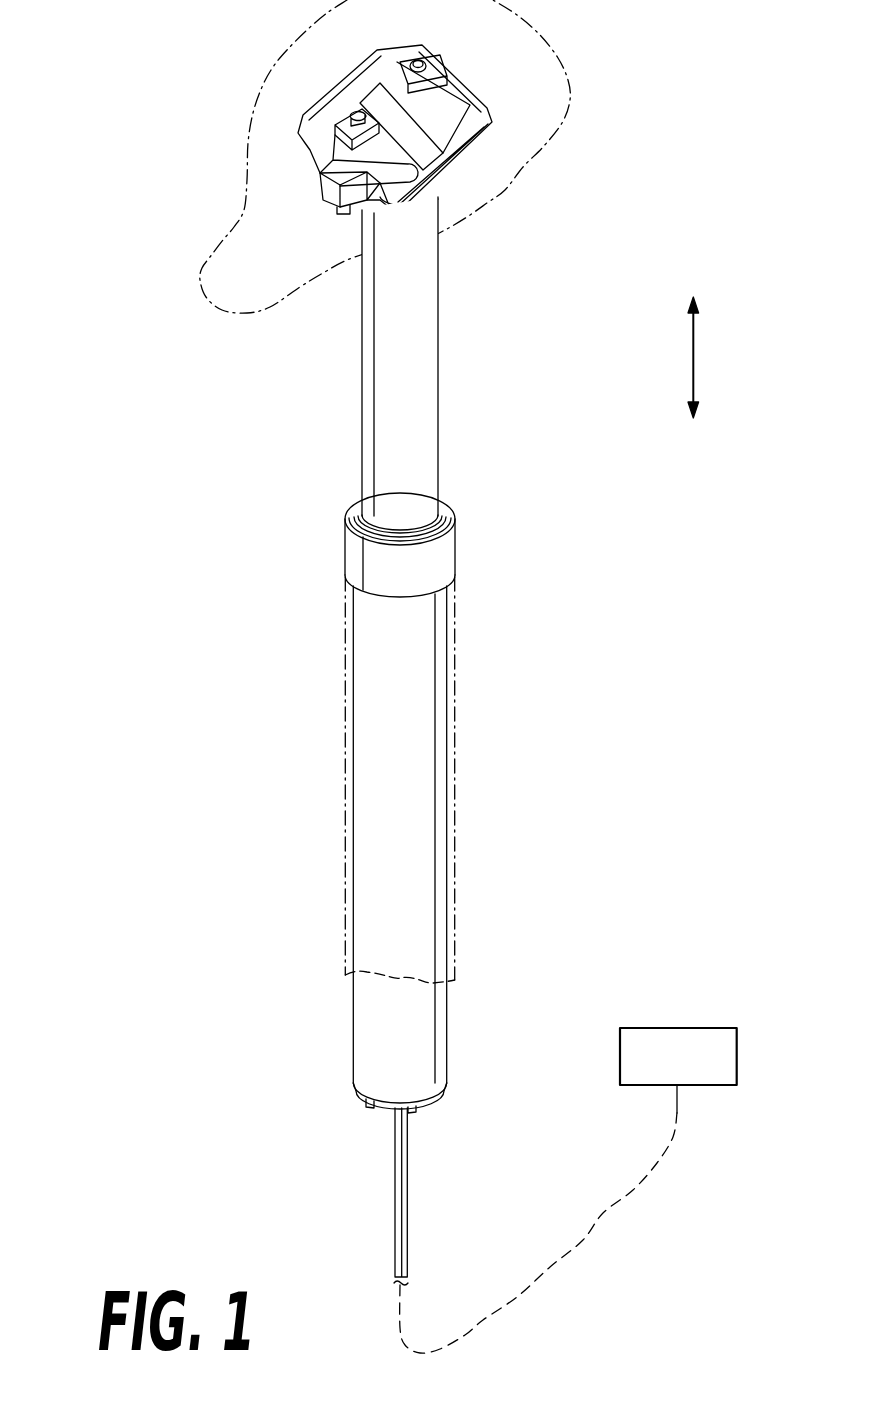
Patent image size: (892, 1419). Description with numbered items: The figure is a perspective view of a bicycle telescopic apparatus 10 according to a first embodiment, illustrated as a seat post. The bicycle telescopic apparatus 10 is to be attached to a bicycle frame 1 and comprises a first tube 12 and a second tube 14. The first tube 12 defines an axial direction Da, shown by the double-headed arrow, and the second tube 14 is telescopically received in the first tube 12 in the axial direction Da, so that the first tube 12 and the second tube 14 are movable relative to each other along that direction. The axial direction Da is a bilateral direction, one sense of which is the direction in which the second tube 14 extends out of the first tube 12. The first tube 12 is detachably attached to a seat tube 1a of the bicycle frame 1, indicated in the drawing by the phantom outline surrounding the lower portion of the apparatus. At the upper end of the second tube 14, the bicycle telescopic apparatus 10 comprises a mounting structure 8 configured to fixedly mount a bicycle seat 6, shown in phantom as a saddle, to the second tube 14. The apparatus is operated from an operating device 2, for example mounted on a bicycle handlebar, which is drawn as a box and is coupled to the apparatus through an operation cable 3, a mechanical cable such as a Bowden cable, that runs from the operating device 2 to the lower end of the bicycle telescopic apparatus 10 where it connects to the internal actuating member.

The bicycle seat 6 is at (568, 80).
The mounting structure 8 is at (313, 97).
The bicycle telescopic apparatus 10 is at (438, 665).
The second tube 14 is at (440, 350).
The first tube 12 is at (447, 1030).
The bicycle frame 1 is at (453, 780).
The seat tube 1a is at (455, 790).
The operating device 2 is at (687, 1067).
The operation cable 3 is at (593, 1225).
The axial direction Da is at (695, 363).